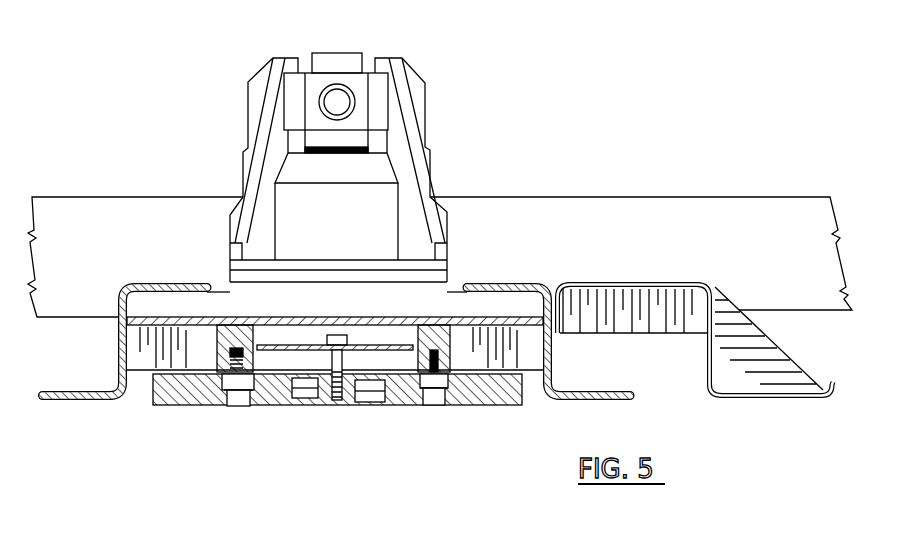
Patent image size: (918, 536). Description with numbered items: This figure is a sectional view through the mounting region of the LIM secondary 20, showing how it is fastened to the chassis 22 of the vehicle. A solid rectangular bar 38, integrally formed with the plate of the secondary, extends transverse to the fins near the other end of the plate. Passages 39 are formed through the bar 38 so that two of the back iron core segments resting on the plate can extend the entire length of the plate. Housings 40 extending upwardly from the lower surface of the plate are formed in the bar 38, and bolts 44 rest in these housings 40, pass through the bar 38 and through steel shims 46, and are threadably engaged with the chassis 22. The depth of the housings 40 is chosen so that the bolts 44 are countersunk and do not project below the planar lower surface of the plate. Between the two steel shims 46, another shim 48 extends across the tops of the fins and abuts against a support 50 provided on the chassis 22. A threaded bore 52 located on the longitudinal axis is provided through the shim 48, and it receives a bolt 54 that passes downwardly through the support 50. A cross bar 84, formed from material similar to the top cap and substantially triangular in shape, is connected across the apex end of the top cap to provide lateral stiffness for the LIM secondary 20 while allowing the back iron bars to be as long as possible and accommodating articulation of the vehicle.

The LIM secondary 20 is at (190, 461).
The chassis 22 is at (450, 258).
The solid rectangular bar 38 is at (500, 406).
The passages 39 is at (313, 399).
The housings 40 is at (247, 408).
The bolts 44 is at (232, 407).
The steel shims 46 is at (258, 347).
The shim 48 is at (380, 368).
The support 50 is at (272, 360).
The threaded bore 52 is at (337, 403).
The bolt 54 is at (335, 335).
The cross bar 84 is at (298, 406).